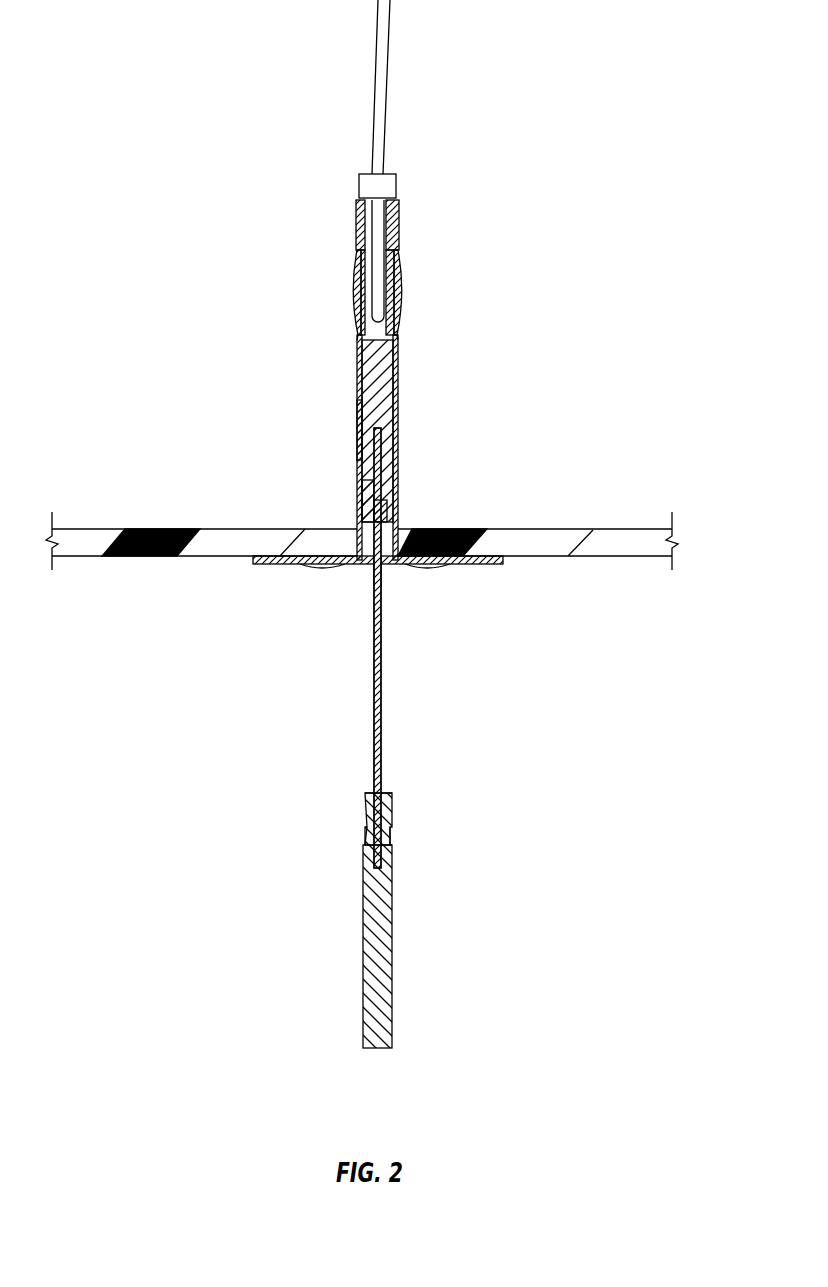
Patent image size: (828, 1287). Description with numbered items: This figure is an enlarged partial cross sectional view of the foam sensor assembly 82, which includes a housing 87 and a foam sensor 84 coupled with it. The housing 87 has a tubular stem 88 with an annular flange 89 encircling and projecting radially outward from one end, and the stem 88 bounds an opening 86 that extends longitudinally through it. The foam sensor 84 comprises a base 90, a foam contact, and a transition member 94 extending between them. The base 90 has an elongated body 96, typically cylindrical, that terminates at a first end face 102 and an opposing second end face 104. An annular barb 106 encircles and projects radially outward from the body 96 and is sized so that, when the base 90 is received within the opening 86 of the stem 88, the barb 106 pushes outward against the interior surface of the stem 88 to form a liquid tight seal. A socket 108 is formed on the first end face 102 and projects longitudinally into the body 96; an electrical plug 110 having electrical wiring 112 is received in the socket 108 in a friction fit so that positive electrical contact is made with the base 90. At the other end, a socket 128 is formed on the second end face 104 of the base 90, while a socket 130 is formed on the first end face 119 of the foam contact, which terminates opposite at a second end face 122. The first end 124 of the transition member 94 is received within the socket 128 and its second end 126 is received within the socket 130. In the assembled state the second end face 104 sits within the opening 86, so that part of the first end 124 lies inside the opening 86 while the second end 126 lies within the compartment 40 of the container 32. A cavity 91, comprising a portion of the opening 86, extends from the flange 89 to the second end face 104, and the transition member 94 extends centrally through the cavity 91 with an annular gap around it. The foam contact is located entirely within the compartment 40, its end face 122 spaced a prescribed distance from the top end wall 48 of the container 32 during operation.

The electrical wiring 112 is at (385, 35).
The first end face 102 is at (357, 200).
The electrical plug 110 is at (388, 240).
The annular barb 106 is at (396, 300).
The socket 108 is at (360, 328).
The elongated body 96 is at (375, 386).
The housing 87 is at (358, 421).
The tubular stem 88 is at (398, 418).
The base 90 is at (392, 358).
The first end of transition member 124 is at (376, 498).
The socket 128 is at (383, 468).
The second end face 104 is at (390, 522).
The container 32 is at (640, 556).
The top end wall 48 is at (618, 530).
The opening 86 is at (368, 550).
The annular flange 89 is at (470, 563).
The cavity 91 is at (388, 565).
The transition member 94 is at (374, 660).
The compartment 40 is at (200, 731).
The second end face 122 is at (381, 1048).
The second end of transition member 126 is at (366, 805).
The first end face 119 is at (387, 793).
The socket 130 is at (391, 835).
The foam sensor assembly 82 is at (506, 392).
The foam sensor 84 is at (468, 882).